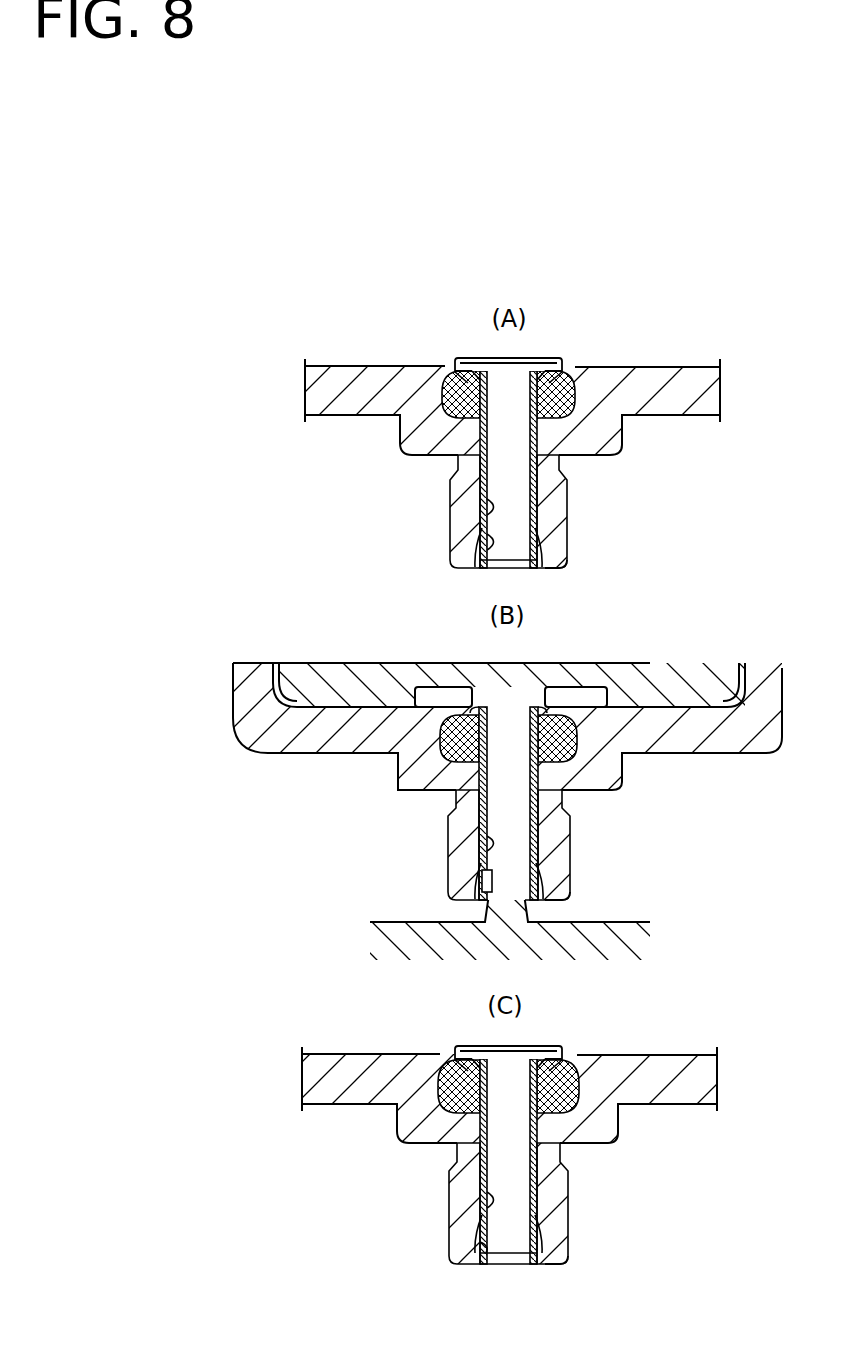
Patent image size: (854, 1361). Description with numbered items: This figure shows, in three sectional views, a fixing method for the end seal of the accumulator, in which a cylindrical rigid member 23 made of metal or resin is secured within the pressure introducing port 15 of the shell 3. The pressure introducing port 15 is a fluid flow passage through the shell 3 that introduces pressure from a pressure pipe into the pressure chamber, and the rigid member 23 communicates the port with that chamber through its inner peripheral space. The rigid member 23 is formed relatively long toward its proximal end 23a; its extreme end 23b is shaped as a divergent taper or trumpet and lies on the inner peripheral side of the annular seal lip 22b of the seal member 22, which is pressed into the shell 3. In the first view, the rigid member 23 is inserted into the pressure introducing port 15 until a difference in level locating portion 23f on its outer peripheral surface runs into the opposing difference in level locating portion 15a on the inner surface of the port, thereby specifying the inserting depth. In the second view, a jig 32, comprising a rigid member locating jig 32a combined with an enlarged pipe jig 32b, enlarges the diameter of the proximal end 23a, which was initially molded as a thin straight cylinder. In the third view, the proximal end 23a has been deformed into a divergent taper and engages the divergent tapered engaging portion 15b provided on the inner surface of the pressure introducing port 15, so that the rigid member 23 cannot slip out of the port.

The shell 3 is at (712, 388).
The pressure introducing port 15 is at (500, 570).
The difference in level locating portion 15a is at (488, 505).
The divergent tapered engaging portion 15b is at (488, 543).
The seal member 22 is at (452, 396).
The annular seal lip 22b is at (465, 372).
The rigid member 23 is at (542, 458).
The proximal end 23a is at (556, 570).
The extreme end 23b is at (553, 366).
The difference in level locating portion 23f is at (538, 533).
The jig 32 is at (504, 785).
The rigid member locating jig 32a is at (678, 678).
The enlarged pipe jig 32b is at (645, 943).